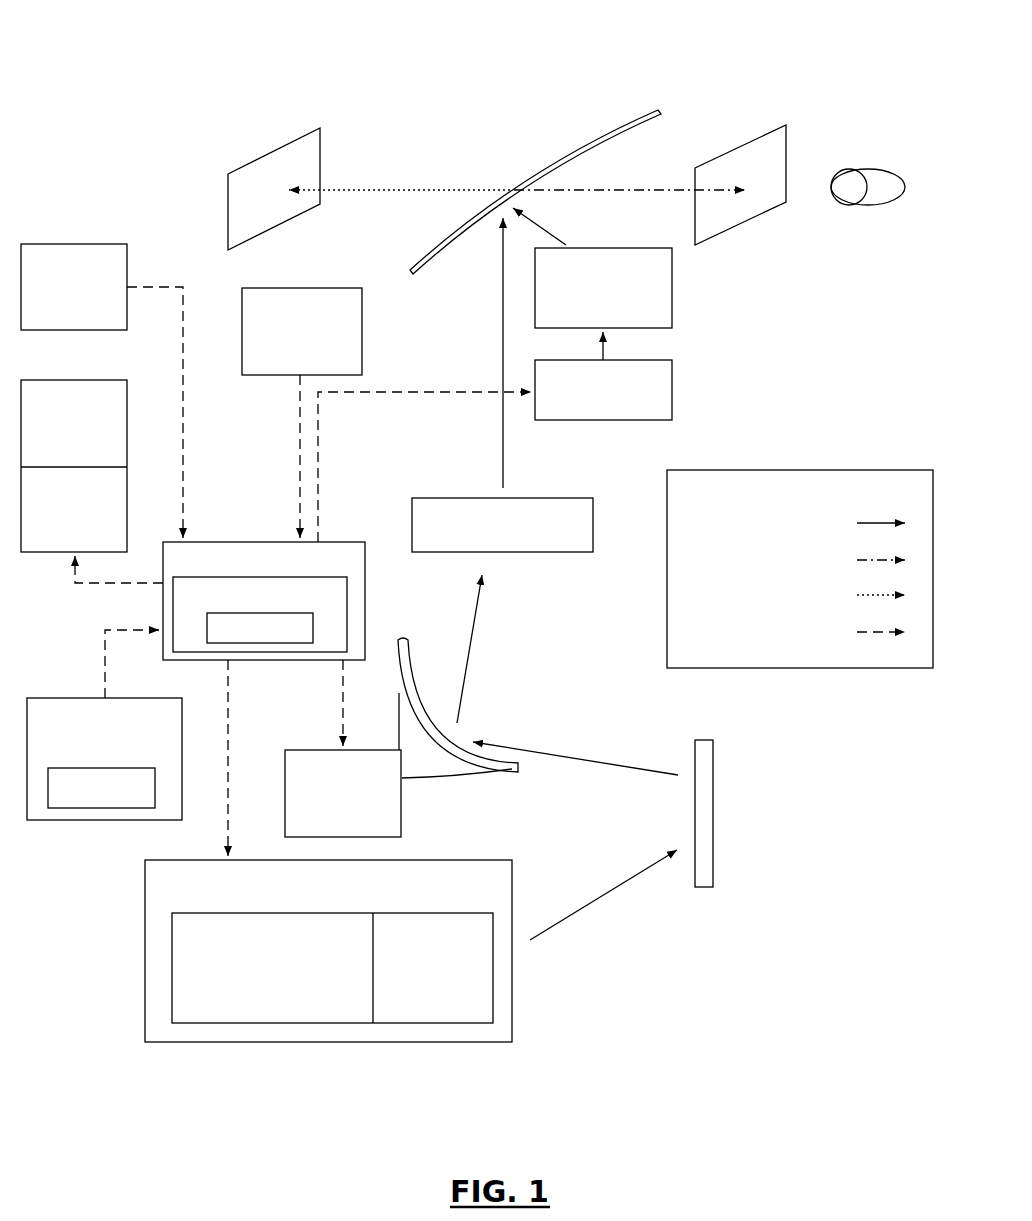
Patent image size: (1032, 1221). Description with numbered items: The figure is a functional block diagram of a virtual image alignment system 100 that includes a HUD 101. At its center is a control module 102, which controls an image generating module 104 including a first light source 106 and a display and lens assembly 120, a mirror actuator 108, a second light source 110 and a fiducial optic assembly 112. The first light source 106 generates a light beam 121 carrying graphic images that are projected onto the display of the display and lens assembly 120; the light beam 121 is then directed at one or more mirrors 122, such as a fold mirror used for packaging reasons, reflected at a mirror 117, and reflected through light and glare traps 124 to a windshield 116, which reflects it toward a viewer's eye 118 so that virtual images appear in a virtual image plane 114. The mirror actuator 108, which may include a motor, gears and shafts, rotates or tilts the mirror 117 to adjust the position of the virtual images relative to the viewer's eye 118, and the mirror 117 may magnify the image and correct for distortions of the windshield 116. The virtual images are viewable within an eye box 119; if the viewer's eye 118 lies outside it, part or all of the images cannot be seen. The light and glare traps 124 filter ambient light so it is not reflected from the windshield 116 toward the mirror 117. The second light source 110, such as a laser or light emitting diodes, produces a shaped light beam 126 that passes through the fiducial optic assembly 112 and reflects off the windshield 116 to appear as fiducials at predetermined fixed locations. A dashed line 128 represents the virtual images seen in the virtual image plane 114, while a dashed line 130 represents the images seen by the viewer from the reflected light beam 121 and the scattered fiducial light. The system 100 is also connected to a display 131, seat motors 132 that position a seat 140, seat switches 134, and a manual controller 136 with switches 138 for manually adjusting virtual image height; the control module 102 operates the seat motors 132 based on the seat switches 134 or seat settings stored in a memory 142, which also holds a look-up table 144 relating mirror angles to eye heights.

The virtual image alignment system 100 is at (191, 57).
The HUD 101 is at (688, 979).
The control module 102 is at (263, 542).
The image generating module 104 is at (145, 903).
The first light source 106 is at (172, 955).
The mirror actuator 108 is at (325, 748).
The second light source 110 is at (675, 387).
The fiducial optic assembly 112 is at (675, 300).
The virtual image plane 114 is at (272, 153).
The windshield 116 is at (614, 125).
The mirror 117 is at (405, 642).
The viewer's eye 118 is at (873, 170).
The eye box 119 is at (743, 143).
The display and lens assembly 120 is at (493, 995).
The light beam 121 is at (505, 452).
The one or more mirrors 122 is at (717, 760).
The light and glare traps 124 is at (457, 498).
The shaped light beam 126 is at (544, 230).
The dashed line 128 is at (412, 187).
The dashed line 130 is at (611, 185).
The display 131 is at (362, 330).
The seat motors 132 is at (63, 554).
The seat switches 134 is at (75, 244).
The manual controller 136 is at (63, 698).
The switches 138 is at (80, 808).
The seat 140 is at (75, 380).
The memory 142 is at (190, 652).
The look-up table (LUT) 144 is at (260, 643).